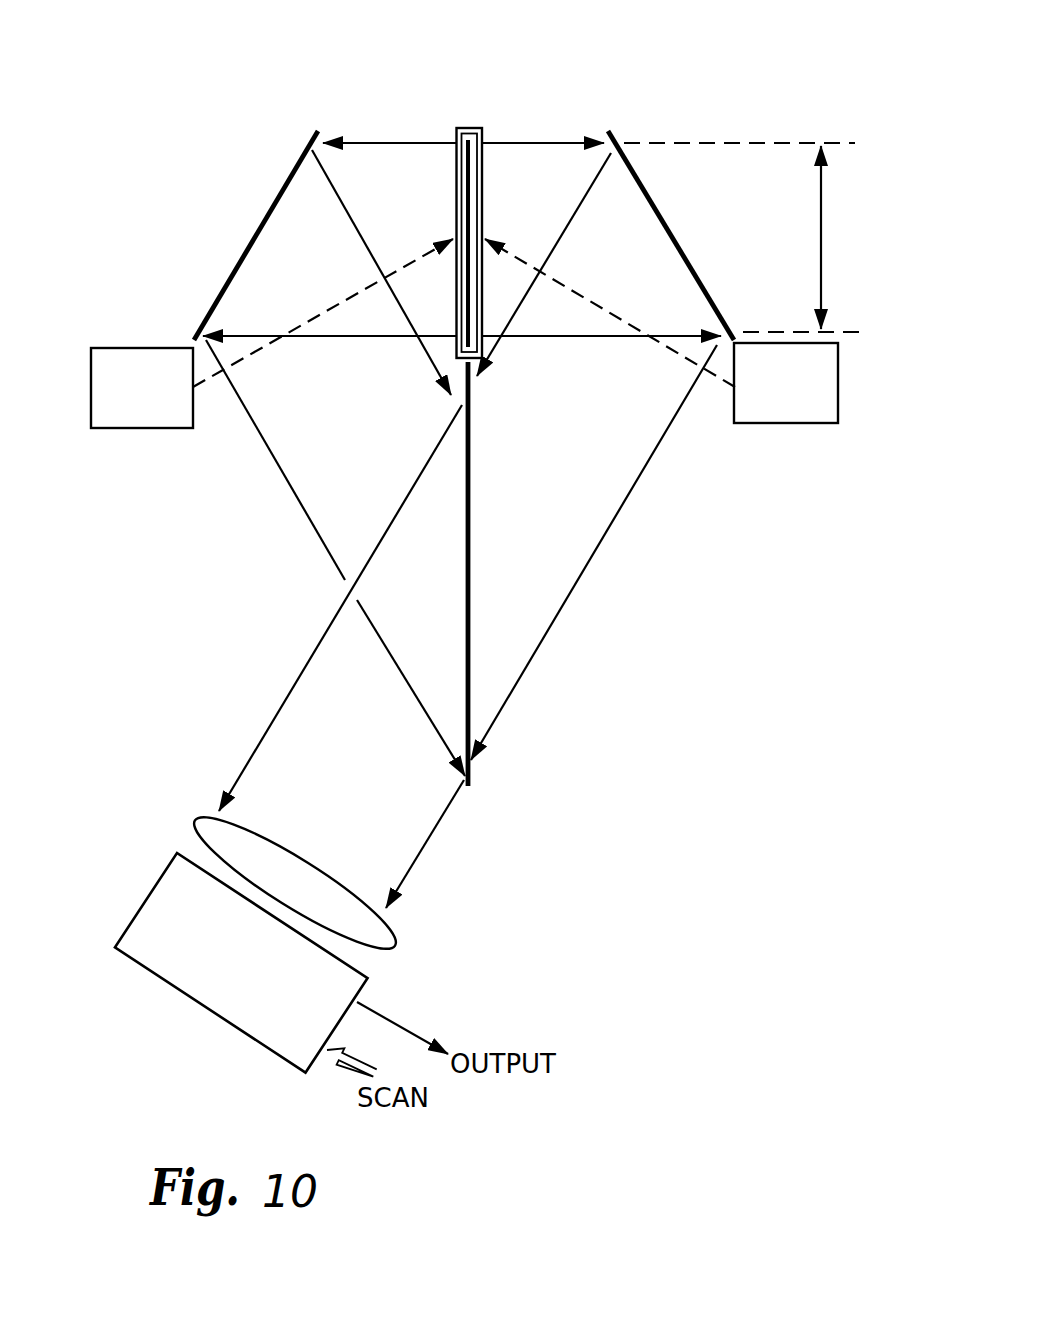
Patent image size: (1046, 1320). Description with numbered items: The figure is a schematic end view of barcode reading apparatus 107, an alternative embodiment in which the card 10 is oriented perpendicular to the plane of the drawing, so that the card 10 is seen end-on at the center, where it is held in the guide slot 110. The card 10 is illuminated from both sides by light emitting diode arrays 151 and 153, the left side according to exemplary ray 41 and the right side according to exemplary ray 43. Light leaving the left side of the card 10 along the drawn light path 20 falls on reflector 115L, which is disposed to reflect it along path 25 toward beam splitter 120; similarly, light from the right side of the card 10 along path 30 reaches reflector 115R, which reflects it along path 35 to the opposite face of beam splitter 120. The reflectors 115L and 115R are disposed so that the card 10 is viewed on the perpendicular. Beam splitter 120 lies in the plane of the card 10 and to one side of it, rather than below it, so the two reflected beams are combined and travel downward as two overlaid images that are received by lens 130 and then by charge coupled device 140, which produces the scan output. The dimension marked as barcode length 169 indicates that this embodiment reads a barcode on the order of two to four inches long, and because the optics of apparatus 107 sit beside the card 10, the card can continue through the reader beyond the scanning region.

The barcode reading apparatus 107 is at (667, 100).
The card 10 is at (470, 130).
The guide slot 110 is at (458, 132).
The first reflector 115L is at (265, 220).
The reflector 115R is at (664, 216).
The light emitting diode array 151 is at (108, 310).
The light emitting diode array 153 is at (840, 355).
The barcode length 169 is at (742, 237).
The first light path 20 is at (402, 148).
The second light path 30 is at (522, 150).
The exemplary ray 41 is at (413, 257).
The exemplary ray 43 is at (522, 257).
The third light path 25 is at (318, 318).
The fourth light path 35 is at (606, 312).
The beam splitter 120 is at (470, 785).
The lens 130 is at (213, 820).
The charge coupled device 140 is at (150, 856).